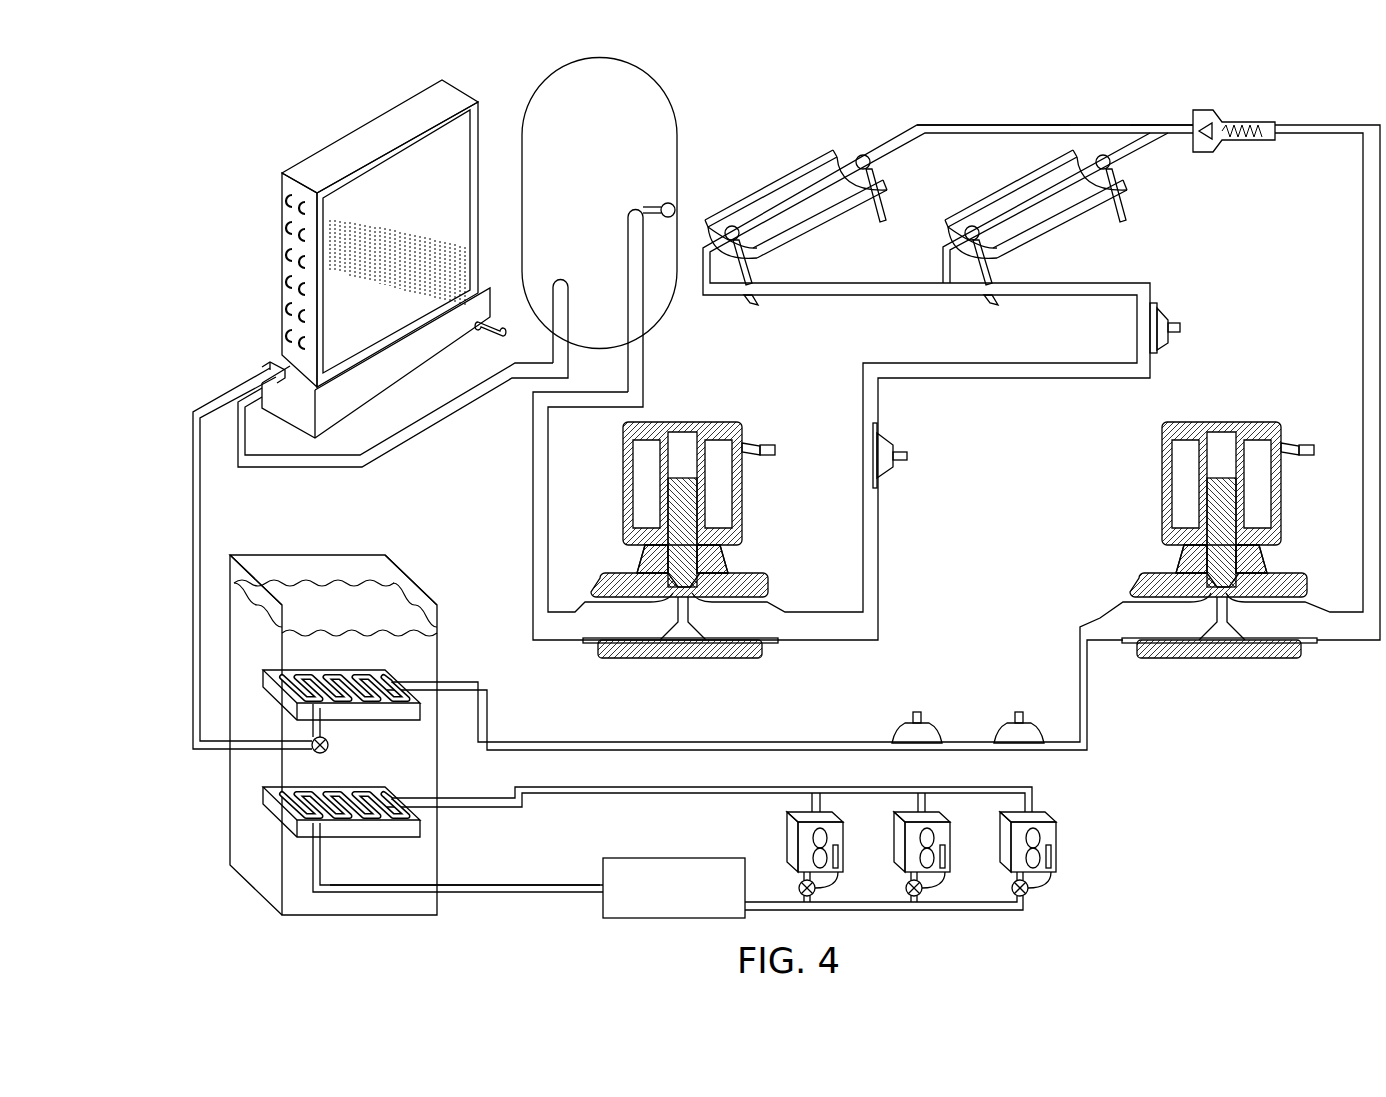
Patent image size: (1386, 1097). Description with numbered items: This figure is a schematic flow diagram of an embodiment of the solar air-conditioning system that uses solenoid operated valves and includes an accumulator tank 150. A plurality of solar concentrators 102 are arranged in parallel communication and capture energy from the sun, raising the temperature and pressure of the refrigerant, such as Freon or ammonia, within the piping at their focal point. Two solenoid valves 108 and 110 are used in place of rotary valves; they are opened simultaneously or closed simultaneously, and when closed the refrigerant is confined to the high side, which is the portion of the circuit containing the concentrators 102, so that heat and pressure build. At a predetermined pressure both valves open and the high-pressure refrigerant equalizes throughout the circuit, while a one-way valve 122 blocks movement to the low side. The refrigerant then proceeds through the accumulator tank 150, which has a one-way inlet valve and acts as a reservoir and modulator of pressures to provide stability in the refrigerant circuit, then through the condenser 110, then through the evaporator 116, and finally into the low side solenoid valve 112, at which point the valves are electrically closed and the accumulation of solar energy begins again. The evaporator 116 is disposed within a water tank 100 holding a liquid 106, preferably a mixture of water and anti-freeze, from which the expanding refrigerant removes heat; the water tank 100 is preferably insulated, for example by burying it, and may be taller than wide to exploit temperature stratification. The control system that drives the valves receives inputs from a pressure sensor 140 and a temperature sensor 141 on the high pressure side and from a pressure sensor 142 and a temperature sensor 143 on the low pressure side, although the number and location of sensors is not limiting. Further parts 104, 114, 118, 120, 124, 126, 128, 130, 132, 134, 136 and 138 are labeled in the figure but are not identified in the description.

The water tank 100 is at (1055, 118).
The solar concentrator 102 is at (830, 148).
The pipe 104 is at (920, 124).
The liquid 106 is at (1148, 120).
The solenoid valve 108 is at (750, 660).
The condenser 110 is at (328, 148).
The low side solenoid valve 112 is at (1280, 660).
The valve 114 is at (336, 752).
The evaporator 116 is at (262, 678).
The water tank 118 is at (250, 857).
The water 120 is at (232, 588).
The one-way valve 122 is at (1253, 143).
The valve seat 124 is at (723, 566).
The valve seat 126 is at (642, 566).
The valve seat 128 is at (1262, 566).
The valve seat 130 is at (1190, 568).
The heat exchanger coil 132 is at (262, 795).
The water line 134 is at (556, 897).
The water pump 136 is at (625, 857).
The faucet unit 138 is at (795, 848).
The pressure sensor 140 is at (1181, 328).
The temperature sensor 141 is at (908, 456).
The pressure sensor 142 is at (1020, 710).
The temperature sensor 143 is at (918, 710).
The accumulator tank 150 is at (683, 132).